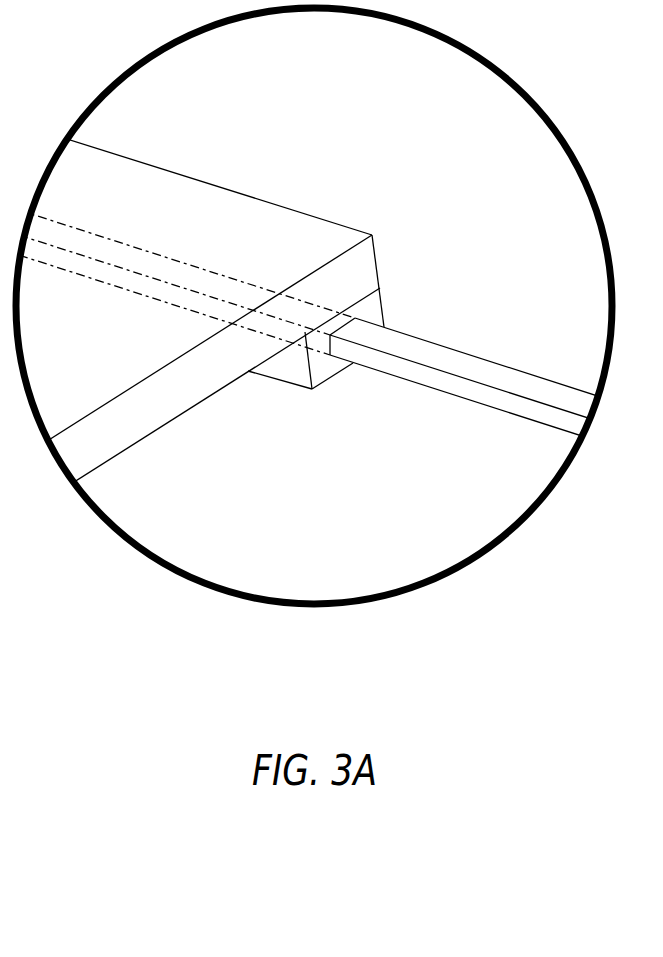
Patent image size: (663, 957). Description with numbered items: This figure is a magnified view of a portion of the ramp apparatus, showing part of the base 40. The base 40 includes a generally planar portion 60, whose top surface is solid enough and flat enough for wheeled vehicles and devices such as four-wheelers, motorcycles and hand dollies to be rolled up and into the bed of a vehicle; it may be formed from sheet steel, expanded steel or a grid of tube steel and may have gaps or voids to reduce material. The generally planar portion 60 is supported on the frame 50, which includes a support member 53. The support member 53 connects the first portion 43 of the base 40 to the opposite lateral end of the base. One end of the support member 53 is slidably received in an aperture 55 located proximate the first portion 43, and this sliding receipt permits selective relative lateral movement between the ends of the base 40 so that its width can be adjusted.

The base 40 is at (403, 223).
The first portion 43 is at (205, 232).
The frame 50 is at (291, 363).
The support member 53 is at (458, 385).
The aperture 55 is at (333, 334).
The generally planar portion 60 is at (150, 197).